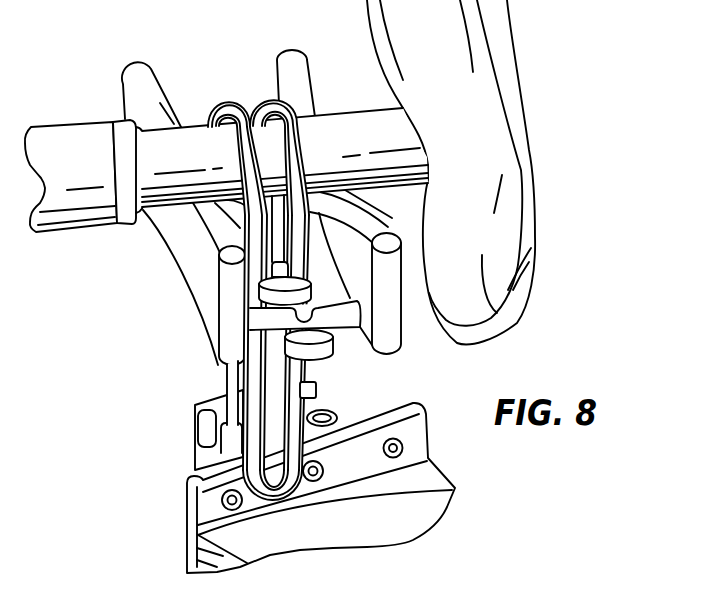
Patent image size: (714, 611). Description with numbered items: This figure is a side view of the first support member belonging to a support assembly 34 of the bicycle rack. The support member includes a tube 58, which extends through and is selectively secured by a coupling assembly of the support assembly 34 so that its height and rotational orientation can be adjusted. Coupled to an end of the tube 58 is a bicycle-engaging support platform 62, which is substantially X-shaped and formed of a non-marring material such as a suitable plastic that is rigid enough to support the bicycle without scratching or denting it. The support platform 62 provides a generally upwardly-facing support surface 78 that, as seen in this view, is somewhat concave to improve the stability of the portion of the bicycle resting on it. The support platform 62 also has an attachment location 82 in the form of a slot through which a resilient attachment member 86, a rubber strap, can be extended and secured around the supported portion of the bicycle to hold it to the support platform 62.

The support surface 78 is at (205, 90).
The bicycle-engaging support platform 62 is at (225, 297).
The tube 58 is at (235, 380).
The resilient attachment member 86 is at (250, 423).
The support assembly 34 is at (189, 492).
The attachment location 82 is at (333, 350).